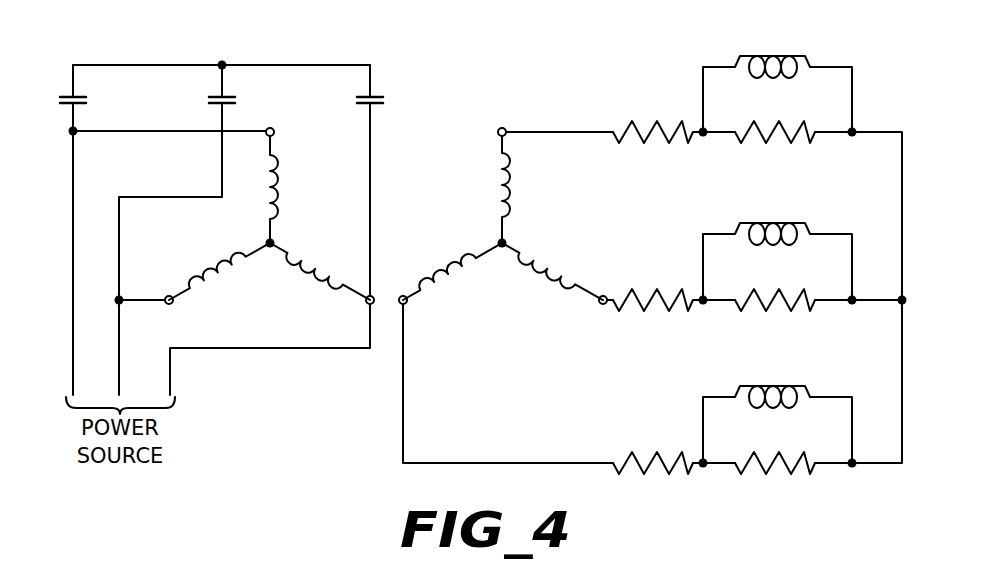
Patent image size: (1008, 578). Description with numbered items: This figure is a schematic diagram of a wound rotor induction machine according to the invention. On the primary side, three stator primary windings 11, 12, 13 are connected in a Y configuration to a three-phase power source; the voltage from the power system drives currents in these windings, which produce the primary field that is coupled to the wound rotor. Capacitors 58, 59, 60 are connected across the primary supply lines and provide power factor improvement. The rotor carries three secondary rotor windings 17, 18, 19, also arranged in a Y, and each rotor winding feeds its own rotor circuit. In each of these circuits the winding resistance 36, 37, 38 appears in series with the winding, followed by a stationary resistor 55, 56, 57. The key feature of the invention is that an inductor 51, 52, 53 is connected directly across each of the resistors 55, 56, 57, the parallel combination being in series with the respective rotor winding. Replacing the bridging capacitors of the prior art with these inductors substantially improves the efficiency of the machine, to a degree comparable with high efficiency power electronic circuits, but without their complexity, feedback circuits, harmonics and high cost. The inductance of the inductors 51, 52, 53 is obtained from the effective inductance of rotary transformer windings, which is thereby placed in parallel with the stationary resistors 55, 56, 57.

The primary winding 11 is at (279, 183).
The primary winding 12 is at (215, 262).
The primary winding 13 is at (308, 278).
The rotor winding 17 is at (502, 205).
The rotor winding 18 is at (455, 273).
The rotor winding 19 is at (541, 275).
The winding resistance 36 is at (642, 124).
The winding resistance 37 is at (642, 292).
The winding resistance 38 is at (642, 455).
The inductor 51 is at (773, 78).
The inductor 52 is at (773, 245).
The inductor 53 is at (773, 408).
The resistor 55 is at (783, 125).
The resistor 56 is at (783, 293).
The resistor 57 is at (783, 456).
The capacitor 58 is at (88, 99).
The capacitor 59 is at (237, 99).
The capacitor 60 is at (385, 99).